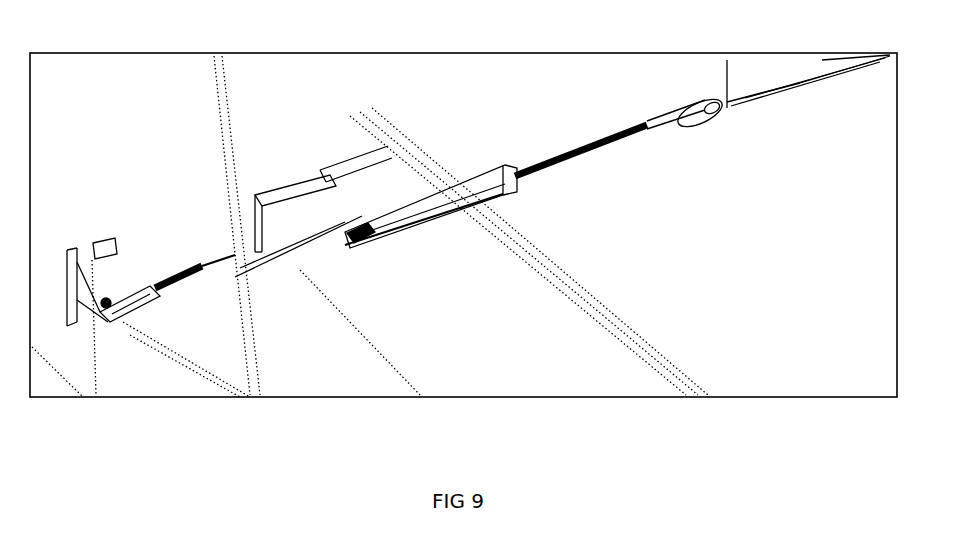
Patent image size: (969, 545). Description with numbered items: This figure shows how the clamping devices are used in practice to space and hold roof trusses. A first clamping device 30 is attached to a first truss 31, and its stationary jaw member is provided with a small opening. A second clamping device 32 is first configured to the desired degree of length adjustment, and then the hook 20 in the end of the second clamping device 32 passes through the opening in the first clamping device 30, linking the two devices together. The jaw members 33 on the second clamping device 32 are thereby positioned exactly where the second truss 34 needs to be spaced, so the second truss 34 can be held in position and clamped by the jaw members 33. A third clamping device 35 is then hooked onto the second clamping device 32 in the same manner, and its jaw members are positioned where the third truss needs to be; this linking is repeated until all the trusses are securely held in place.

The hook 20 is at (685, 83).
The first clamping device 30 is at (798, 85).
The first truss 31 is at (809, 50).
The second clamping device 32 is at (433, 176).
The jaw members 33 is at (291, 228).
The second truss 34 is at (322, 151).
The third clamping device 35 is at (186, 265).